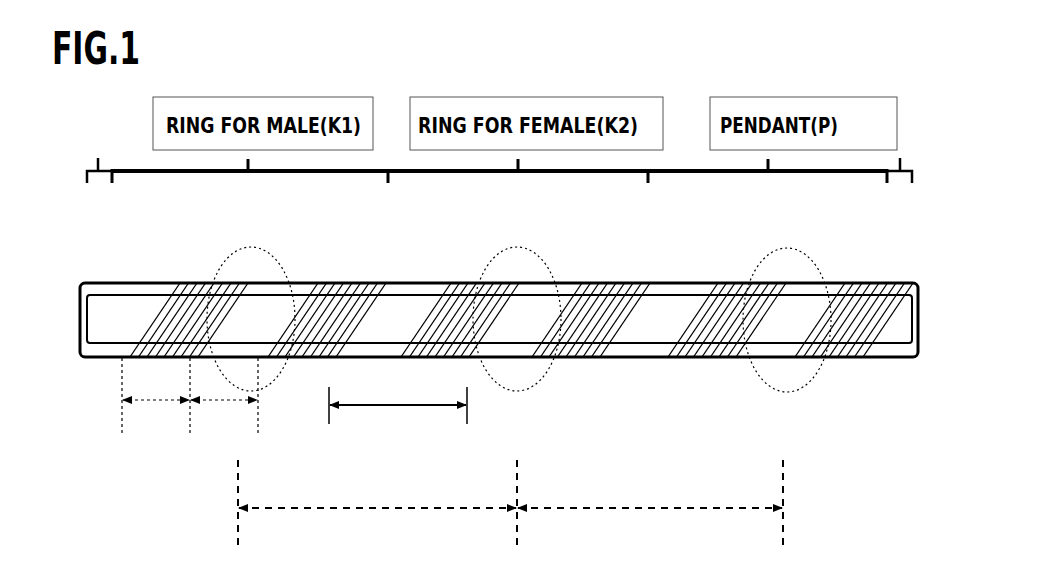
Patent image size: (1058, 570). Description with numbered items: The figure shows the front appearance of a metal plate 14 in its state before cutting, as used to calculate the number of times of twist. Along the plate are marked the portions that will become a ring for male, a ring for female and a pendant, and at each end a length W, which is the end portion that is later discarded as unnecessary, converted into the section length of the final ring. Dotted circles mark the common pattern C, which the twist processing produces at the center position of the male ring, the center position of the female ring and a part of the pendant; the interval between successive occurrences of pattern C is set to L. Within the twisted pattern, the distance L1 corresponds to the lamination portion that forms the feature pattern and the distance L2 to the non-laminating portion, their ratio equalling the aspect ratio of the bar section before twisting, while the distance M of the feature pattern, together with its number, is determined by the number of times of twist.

The metal plate 14 is at (103, 306).
The common pattern C is at (538, 301).
The end portion length W is at (499, 148).
The interval of pattern C L is at (510, 504).
The distance of lamination portion L1 is at (190, 397).
The distance of non-laminating portion L2 is at (224, 417).
The distance of feature pattern M is at (398, 400).